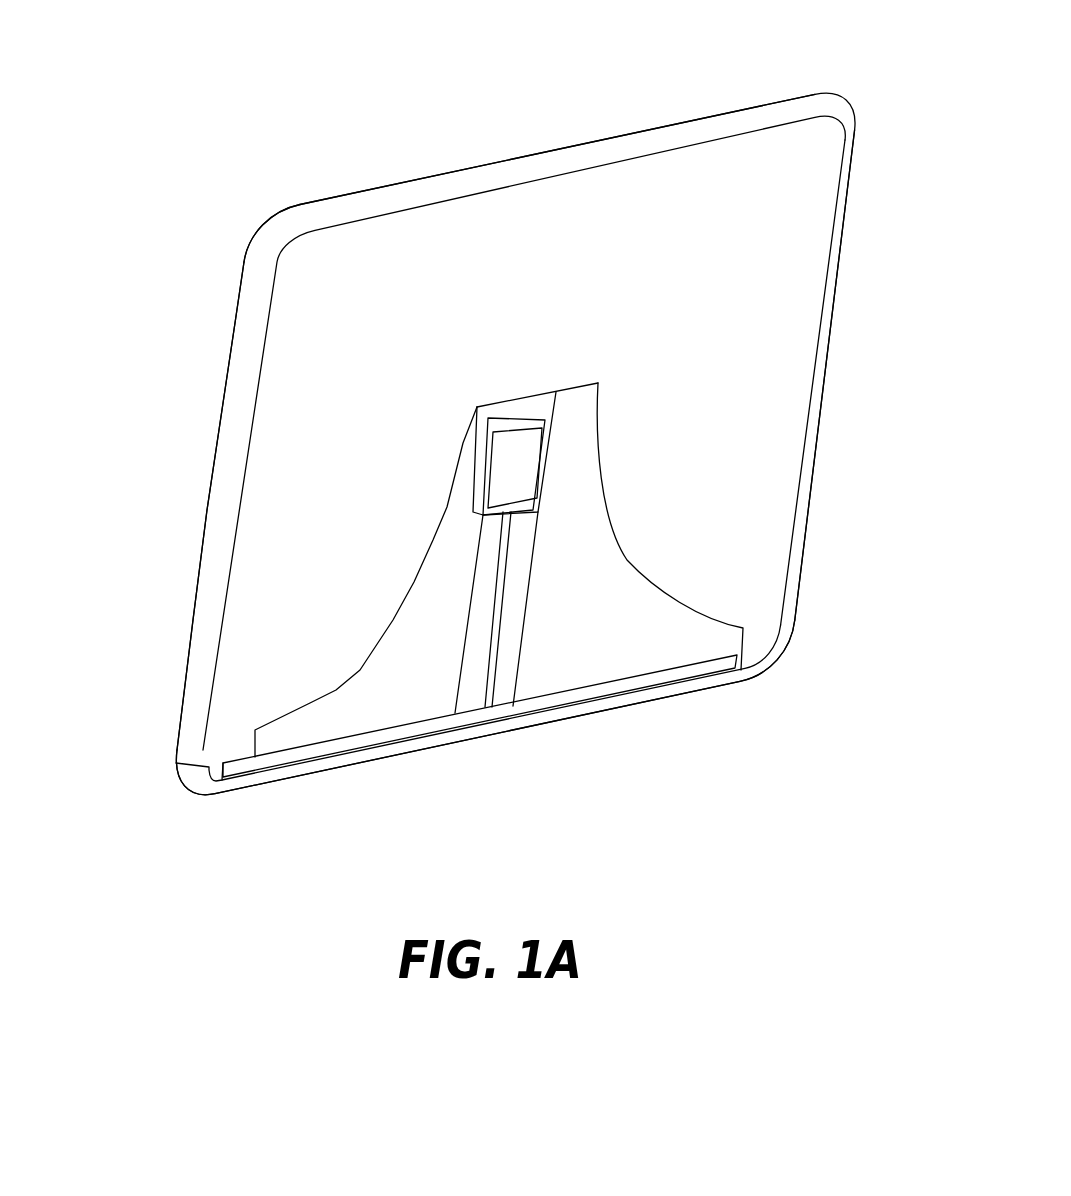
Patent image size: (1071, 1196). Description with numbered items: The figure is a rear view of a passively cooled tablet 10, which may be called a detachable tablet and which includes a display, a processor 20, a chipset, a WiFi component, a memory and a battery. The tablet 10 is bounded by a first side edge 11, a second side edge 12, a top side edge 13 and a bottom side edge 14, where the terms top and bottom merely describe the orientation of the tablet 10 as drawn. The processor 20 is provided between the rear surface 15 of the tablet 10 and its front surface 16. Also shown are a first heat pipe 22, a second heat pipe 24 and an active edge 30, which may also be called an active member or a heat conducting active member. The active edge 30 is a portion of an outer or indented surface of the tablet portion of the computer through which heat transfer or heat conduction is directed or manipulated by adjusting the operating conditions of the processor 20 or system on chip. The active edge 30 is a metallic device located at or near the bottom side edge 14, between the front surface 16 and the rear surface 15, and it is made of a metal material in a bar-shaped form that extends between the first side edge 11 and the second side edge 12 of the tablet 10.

The tablet 10 is at (152, 263).
The first side edge 11 is at (222, 494).
The second side edge 12 is at (833, 310).
The top side edge 13 is at (698, 118).
The bottom side edge 14 is at (717, 686).
The rear surface 15 is at (273, 383).
The front surface 16 is at (300, 188).
The processor 20 is at (514, 440).
The first heat pipe 22 is at (522, 554).
The second heat pipe 24 is at (482, 590).
The active edge 30 is at (430, 729).